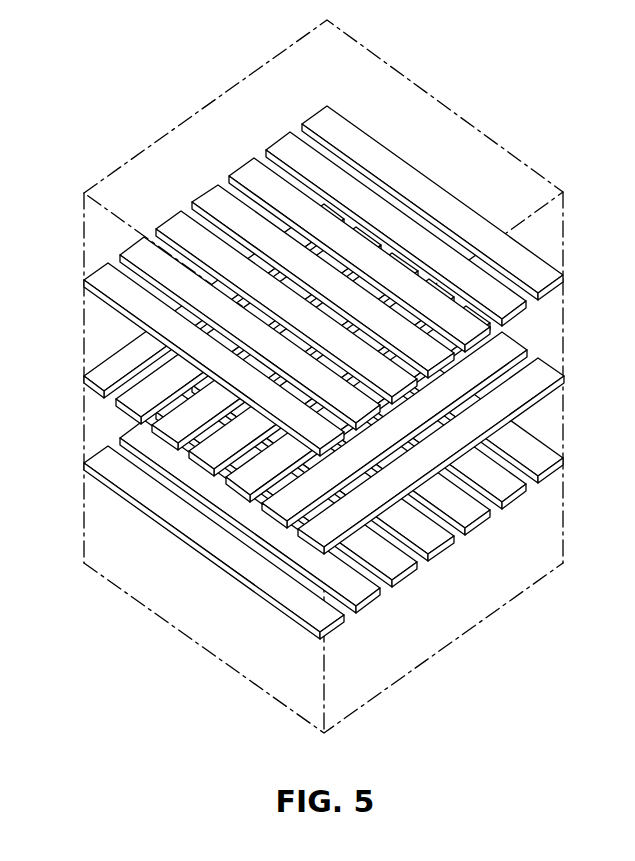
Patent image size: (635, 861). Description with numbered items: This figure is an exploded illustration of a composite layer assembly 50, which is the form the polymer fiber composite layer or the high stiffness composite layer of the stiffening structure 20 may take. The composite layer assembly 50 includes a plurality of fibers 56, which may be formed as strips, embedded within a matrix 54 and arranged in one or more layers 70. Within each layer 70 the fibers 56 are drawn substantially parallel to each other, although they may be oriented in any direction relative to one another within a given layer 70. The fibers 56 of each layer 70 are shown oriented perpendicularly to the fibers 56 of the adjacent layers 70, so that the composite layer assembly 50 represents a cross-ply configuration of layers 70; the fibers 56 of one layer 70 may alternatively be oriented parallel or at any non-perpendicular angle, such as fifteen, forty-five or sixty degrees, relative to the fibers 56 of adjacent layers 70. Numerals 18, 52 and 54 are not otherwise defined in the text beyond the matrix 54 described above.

The lower conductive lines (bit lines) 18 is at (468, 515).
The stiffening structure 20 is at (306, 464).
The composite layer assembly 50 is at (323, 376).
The upper boundary surface 52 is at (415, 112).
The matrix 54 is at (215, 632).
The fibers 56 is at (523, 317).
The layers 70 is at (85, 285).